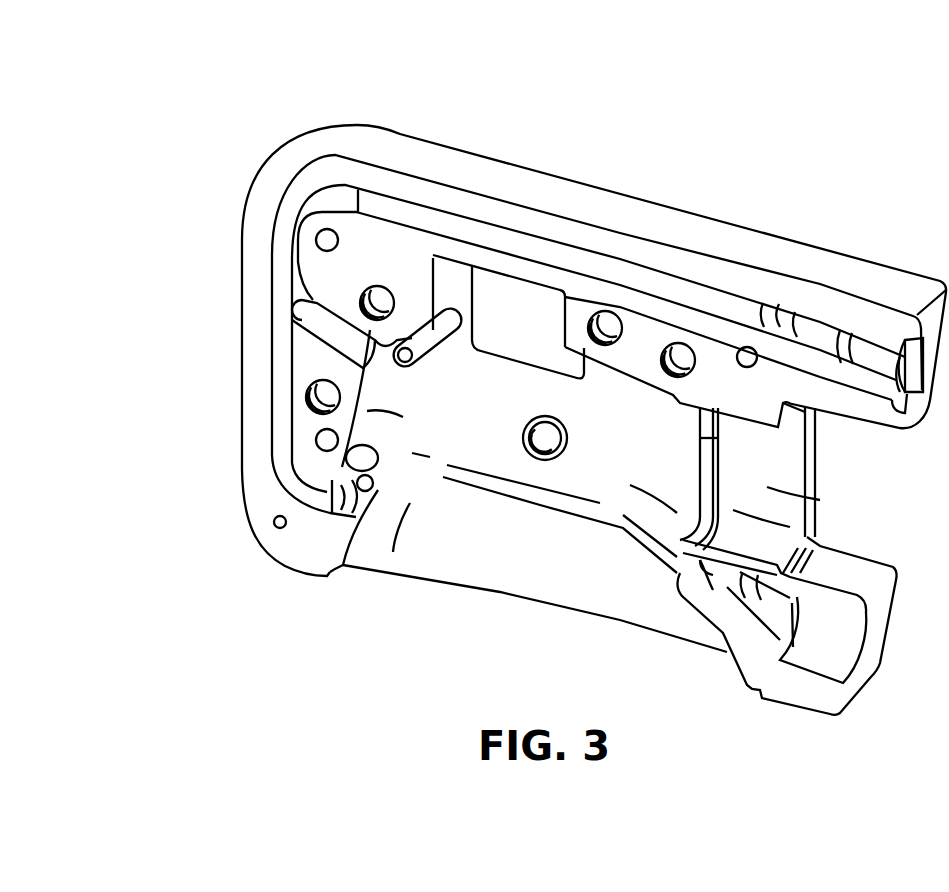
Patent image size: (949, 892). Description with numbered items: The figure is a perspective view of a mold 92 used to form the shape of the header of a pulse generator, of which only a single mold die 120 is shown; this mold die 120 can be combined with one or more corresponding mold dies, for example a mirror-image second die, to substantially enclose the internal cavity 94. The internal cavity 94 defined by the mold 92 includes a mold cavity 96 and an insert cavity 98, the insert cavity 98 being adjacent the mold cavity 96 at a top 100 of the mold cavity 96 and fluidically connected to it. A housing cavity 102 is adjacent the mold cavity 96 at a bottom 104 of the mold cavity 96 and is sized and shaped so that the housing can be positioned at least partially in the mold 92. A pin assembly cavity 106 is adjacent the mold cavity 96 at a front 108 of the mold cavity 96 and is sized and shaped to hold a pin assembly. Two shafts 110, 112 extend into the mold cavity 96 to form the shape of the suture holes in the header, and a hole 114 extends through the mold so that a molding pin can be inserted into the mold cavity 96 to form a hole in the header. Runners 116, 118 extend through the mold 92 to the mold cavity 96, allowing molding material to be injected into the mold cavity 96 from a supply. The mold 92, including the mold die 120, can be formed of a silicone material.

The mold 92 is at (216, 233).
The mold die 120 is at (263, 172).
The shaft 110 is at (292, 320).
The internal cavity 94 is at (360, 389).
The shaft 112 is at (357, 481).
The insert cavity 98 is at (533, 308).
The top of the mold cavity 100 is at (572, 345).
The mold cavity 96 is at (603, 397).
The runner 116 is at (750, 306).
The front of the mold cavity 108 is at (720, 440).
The pin assembly cavity 106 is at (780, 487).
The hole 114 is at (537, 460).
The runner 118 is at (727, 587).
The housing cavity 102 is at (457, 557).
The bottom of the mold cavity 104 is at (363, 560).